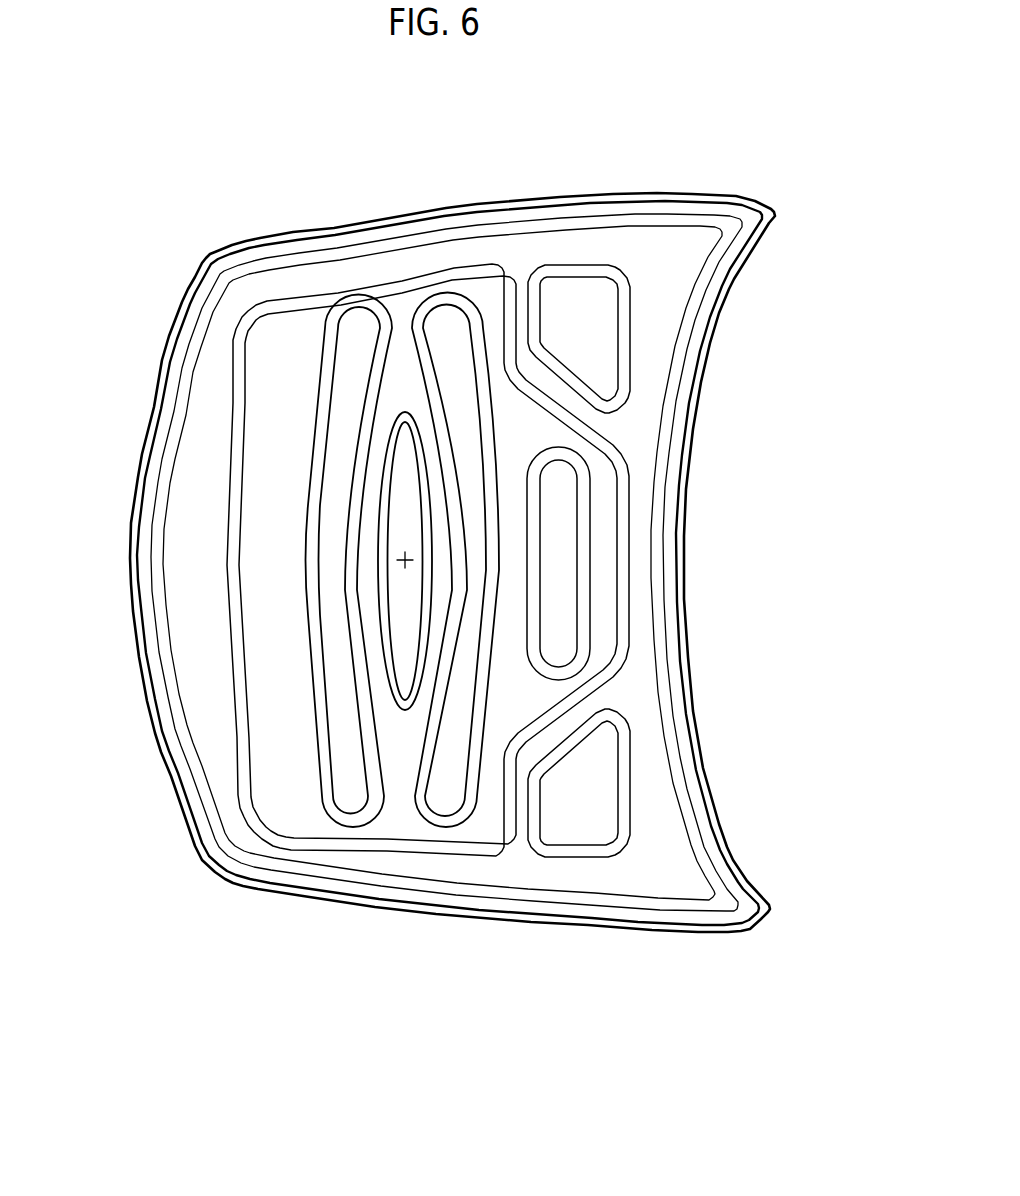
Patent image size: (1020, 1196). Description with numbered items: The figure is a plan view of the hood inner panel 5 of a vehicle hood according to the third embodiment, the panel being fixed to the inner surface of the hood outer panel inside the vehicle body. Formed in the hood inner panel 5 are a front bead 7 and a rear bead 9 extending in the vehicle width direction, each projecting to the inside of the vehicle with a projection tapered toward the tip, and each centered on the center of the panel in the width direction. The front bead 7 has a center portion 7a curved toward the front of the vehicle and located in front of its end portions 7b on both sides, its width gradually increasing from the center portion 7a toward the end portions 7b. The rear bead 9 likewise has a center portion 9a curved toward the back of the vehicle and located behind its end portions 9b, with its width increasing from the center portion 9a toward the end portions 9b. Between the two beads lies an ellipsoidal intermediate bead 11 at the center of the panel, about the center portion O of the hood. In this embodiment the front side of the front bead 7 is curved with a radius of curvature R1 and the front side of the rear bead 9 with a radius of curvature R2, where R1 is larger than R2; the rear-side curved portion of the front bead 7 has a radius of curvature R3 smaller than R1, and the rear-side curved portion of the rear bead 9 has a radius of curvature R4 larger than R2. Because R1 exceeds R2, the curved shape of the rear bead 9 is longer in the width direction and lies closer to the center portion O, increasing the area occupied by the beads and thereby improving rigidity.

The hood inner panel 5 is at (656, 933).
The front bead 7 is at (300, 497).
The center portion of the front bead 7a is at (330, 563).
The end portions of the front bead 7b is at (352, 324).
The rear bead 9 is at (512, 580).
The center portion of the rear bead 9a is at (482, 553).
The end portions of the rear bead 9b is at (445, 322).
The intermediate bead 11 is at (387, 477).
The center portion of the hood O is at (412, 559).
The radius of curvature of the front side of the front bead R1 is at (307, 637).
The radius of curvature of the front side of the rear bead R2 is at (452, 517).
The radius of curvature of the rear side of the front bead R3 is at (372, 433).
The radius of curvature of the rear side of the rear bead R4 is at (495, 708).